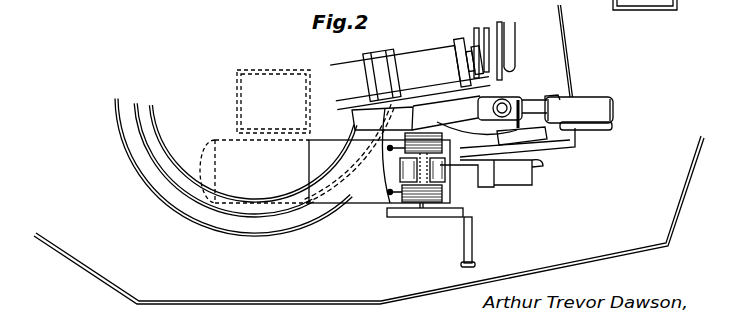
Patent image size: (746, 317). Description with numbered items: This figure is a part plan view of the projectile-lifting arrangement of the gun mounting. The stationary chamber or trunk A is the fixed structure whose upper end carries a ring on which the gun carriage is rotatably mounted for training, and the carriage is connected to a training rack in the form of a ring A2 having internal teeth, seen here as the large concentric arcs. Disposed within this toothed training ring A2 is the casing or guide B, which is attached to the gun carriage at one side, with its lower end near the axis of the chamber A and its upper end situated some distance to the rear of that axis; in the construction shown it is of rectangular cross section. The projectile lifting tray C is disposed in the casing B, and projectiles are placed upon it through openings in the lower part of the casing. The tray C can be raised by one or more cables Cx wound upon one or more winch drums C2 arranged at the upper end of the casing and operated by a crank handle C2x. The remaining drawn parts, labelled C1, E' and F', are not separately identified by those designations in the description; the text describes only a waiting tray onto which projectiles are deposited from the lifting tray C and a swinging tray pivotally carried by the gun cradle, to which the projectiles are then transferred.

The stationary chamber or trunk A is at (312, 219).
The training rack ring A2 is at (183, 180).
The casing or guide B is at (352, 172).
The projectile lifting tray C is at (479, 133).
The coil of controlling device C1 is at (480, 171).
The winch drums C2 is at (390, 148).
The cables Cx is at (393, 196).
The crank handle C2x is at (472, 237).
The stop block E' is at (504, 173).
The buffer F' is at (591, 112).